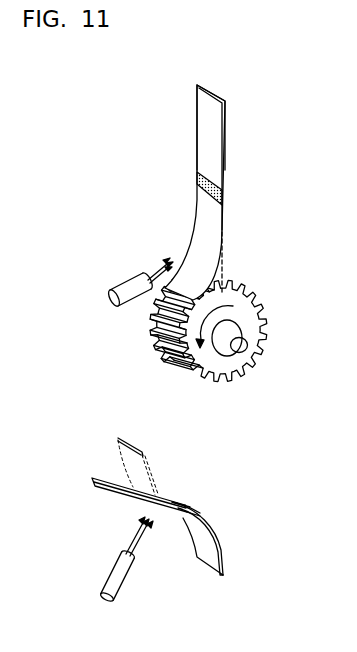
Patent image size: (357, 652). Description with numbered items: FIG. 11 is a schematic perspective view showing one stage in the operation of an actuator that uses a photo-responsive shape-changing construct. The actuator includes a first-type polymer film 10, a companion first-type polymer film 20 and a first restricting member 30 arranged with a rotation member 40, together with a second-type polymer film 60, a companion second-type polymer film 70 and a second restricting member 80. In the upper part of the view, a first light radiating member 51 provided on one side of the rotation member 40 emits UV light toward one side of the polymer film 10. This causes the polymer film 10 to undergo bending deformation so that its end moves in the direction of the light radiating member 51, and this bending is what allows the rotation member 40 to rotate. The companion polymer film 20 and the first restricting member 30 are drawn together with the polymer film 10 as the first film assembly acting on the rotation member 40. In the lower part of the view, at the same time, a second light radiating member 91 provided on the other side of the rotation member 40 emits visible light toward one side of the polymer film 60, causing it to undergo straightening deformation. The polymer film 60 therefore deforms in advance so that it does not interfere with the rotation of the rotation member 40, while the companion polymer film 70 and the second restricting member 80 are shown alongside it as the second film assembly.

The 1-1 polymer film 10 is at (238, 192).
The 1-2 polymer film 20 is at (223, 140).
The first restricting member 30 is at (223, 199).
The rotation member 40 is at (259, 345).
The 1-1a light radiating member 51 is at (117, 287).
The 2-1 polymer film 60 is at (118, 485).
The 2-2 polymer film 70 is at (208, 557).
The second restricting member 80 is at (176, 506).
The 2-1a light radiating member 91 is at (112, 571).